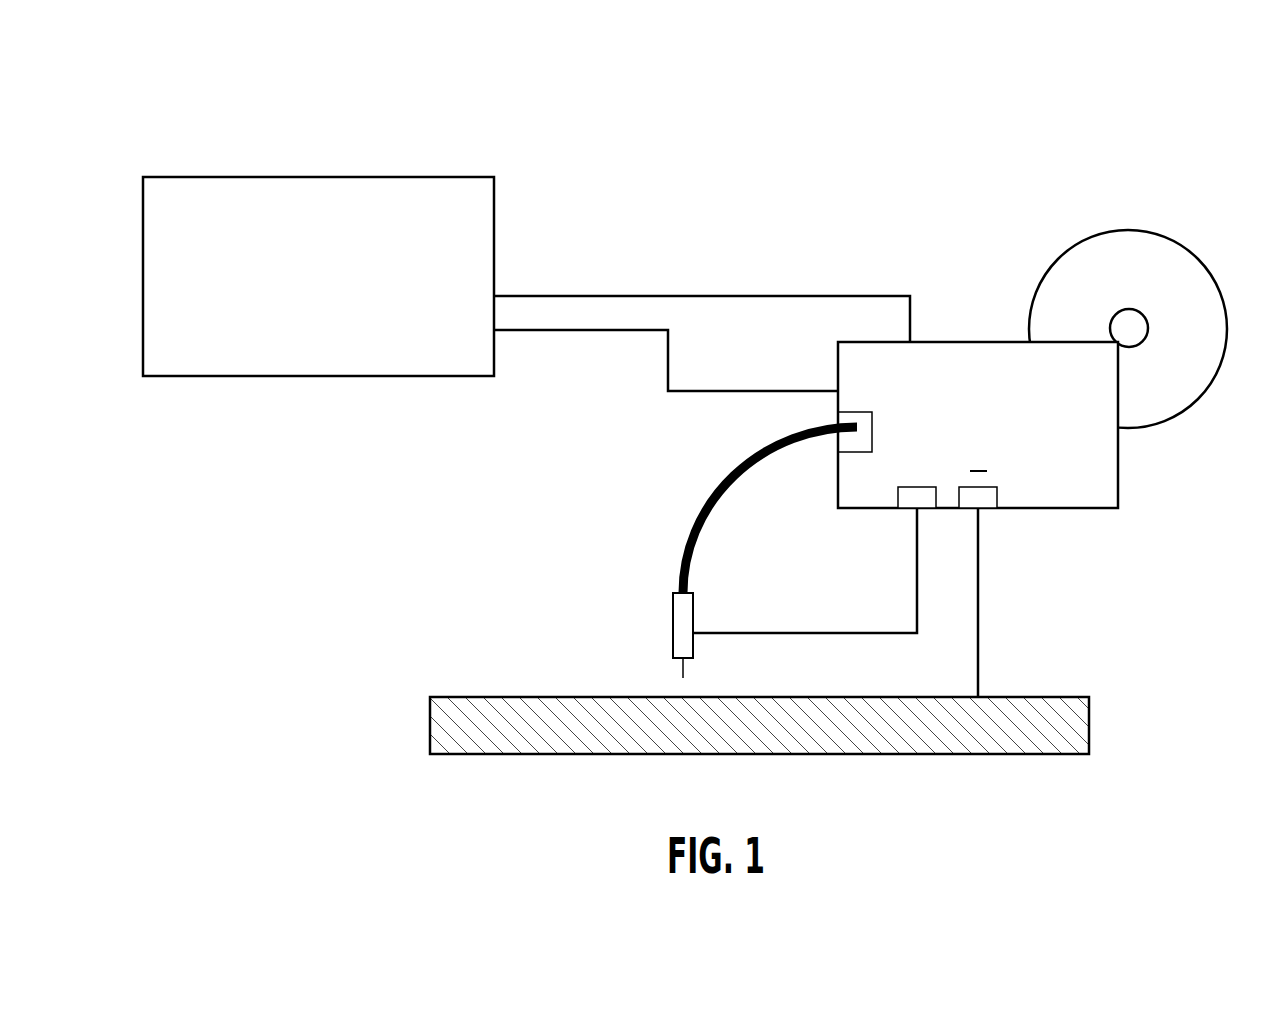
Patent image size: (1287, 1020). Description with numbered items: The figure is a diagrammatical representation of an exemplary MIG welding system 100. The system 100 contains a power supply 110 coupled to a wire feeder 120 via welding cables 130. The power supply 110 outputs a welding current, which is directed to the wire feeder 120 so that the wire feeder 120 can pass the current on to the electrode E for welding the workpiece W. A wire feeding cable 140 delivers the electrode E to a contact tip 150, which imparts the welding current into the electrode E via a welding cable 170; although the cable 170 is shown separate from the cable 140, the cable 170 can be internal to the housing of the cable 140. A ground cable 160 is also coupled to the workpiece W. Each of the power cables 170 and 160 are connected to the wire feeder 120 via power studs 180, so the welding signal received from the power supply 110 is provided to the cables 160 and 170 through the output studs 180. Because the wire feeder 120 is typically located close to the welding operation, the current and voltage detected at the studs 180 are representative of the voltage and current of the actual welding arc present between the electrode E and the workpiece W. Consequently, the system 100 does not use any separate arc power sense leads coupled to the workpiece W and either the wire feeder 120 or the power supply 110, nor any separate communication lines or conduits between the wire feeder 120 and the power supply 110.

The MIG welding system 100 is at (790, 118).
The power supply 110 is at (320, 177).
The wire feeder 120 is at (1118, 473).
The welding cables 130 is at (612, 330).
The wire feeding cable 140 is at (750, 467).
The contact tip 150 is at (693, 612).
The ground cable 160 is at (978, 583).
The welding cable 170 is at (917, 550).
The power studs 180 is at (898, 493).
The electrode E is at (683, 668).
The workpiece W is at (1003, 754).